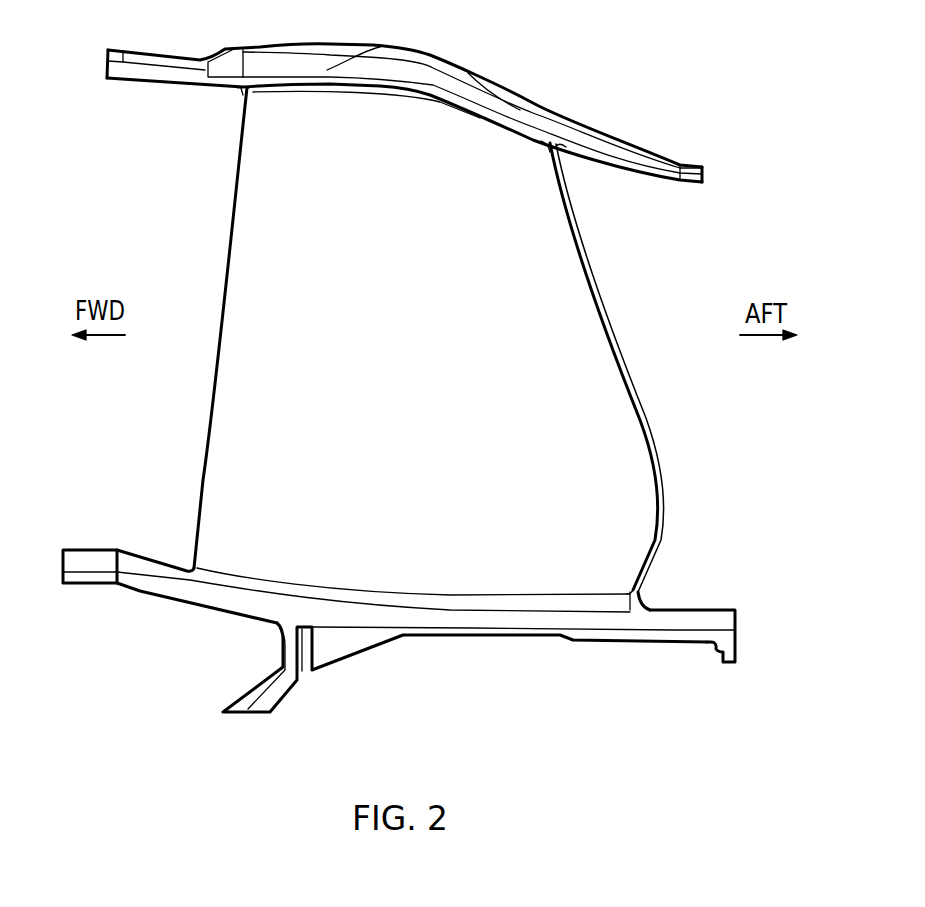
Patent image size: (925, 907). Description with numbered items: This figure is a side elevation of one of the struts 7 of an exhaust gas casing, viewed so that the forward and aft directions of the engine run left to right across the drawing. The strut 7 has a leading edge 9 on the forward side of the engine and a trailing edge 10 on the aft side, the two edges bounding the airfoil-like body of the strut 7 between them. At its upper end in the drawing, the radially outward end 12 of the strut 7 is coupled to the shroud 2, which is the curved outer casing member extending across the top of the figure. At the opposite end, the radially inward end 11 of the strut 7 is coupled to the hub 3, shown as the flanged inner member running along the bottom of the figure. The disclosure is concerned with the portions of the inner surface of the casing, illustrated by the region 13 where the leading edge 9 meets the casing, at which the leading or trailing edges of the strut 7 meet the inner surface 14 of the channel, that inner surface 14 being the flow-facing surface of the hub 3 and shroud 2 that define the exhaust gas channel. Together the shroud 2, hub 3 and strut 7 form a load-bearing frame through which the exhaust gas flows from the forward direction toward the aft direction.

The shroud 2 is at (533, 100).
The hub 3 is at (399, 600).
The strut 7 is at (437, 340).
The leading edge 9 is at (196, 436).
The trailing edge 10 is at (676, 470).
The radially inward end 11 is at (645, 598).
The radially outward end 12 is at (560, 150).
The portion of the inner surface of the casing 13 is at (243, 89).
The inner surface of the channel 14 is at (110, 548).